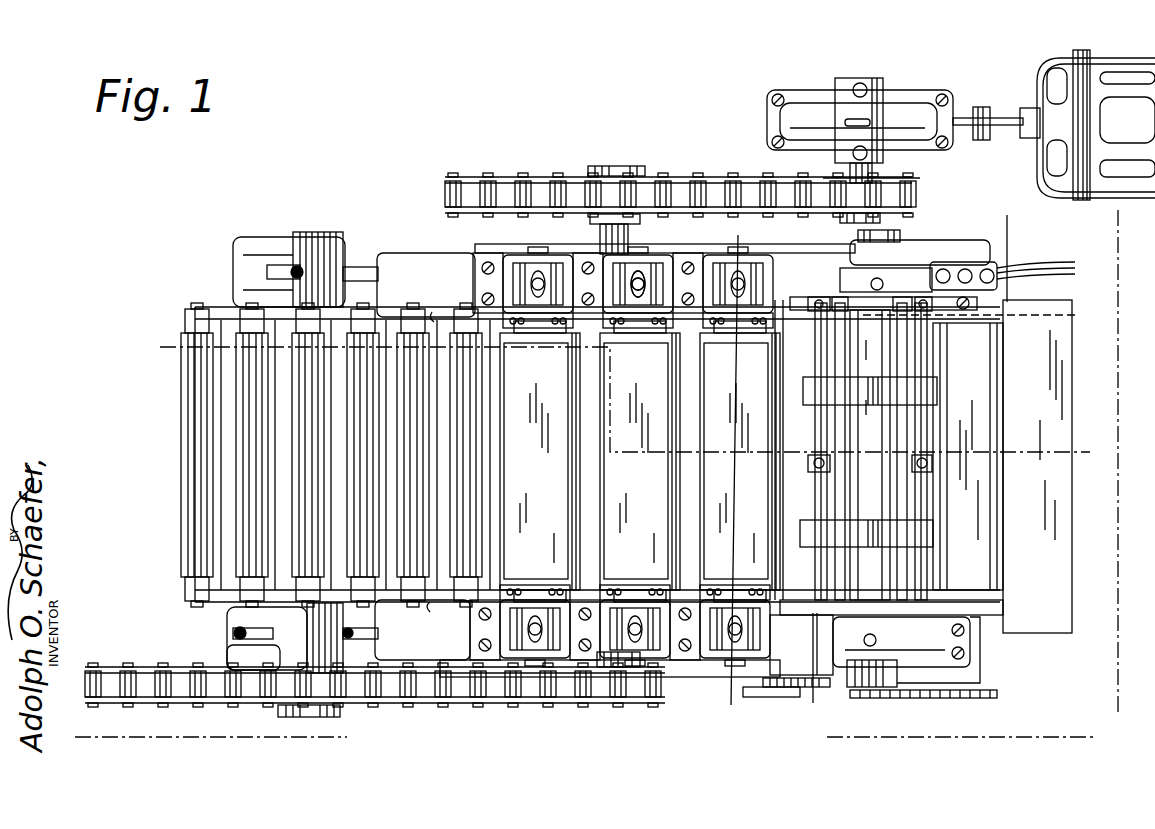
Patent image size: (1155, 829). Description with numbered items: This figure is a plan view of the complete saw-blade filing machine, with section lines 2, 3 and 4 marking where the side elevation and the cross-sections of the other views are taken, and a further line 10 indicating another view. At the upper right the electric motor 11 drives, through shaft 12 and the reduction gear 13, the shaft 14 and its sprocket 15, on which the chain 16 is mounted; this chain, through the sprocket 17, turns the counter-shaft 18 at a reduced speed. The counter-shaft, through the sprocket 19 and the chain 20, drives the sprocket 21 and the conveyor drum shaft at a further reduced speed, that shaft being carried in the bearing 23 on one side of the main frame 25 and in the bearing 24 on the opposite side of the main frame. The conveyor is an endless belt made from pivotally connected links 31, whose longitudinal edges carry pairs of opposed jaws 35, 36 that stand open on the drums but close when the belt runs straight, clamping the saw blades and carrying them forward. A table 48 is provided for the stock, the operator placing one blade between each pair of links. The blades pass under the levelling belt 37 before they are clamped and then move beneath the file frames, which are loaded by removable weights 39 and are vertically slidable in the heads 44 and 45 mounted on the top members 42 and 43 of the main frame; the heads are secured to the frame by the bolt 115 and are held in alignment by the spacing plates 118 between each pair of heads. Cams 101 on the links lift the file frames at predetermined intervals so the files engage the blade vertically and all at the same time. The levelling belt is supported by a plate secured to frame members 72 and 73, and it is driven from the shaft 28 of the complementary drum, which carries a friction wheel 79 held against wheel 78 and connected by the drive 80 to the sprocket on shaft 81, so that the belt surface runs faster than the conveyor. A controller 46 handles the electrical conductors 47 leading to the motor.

The electric motor 11 is at (1126, 68).
The shaft 12 is at (1003, 120).
The reduction gear 13 is at (790, 122).
The shaft 14 is at (875, 172).
The sprocket 15 is at (836, 182).
The chain 16 is at (740, 185).
The sprocket 17 is at (585, 171).
The counter-shaft 18 is at (604, 238).
The sprocket 19 is at (662, 677).
The chain 20 is at (476, 712).
The sprocket 21 is at (340, 714).
The bearing 23 is at (287, 655).
The bearing 24 is at (295, 240).
The main frame 25 is at (240, 254).
The shaft 28 is at (848, 703).
The links 31 is at (331, 455).
The jaw 35 is at (367, 406).
The jaw 36 is at (404, 432).
The levelling belt 37 is at (952, 392).
The removable weights 39 is at (640, 461).
The top member of main frame 42 is at (690, 421).
The top member of main frame 43 is at (422, 630).
The head 44 is at (523, 242).
The head 45 is at (502, 636).
The controller 46 is at (990, 267).
The electrical conductors 47 is at (1055, 262).
The table 48 is at (969, 424).
The frame member 72 is at (893, 634).
The frame member 73 is at (836, 303).
The wheel 78 is at (997, 694).
The friction wheel 79 is at (790, 698).
The drive 80 is at (815, 703).
The shaft 81 is at (816, 651).
The cams 101 is at (450, 454).
The bolt 115 is at (640, 271).
The spacing plates 118 is at (675, 281).
The center line 10 is at (767, 232).
The section line 2- 2 is at (75, 762).
The section line 3- 3 is at (165, 372).
The section line 4- 4 is at (1142, 212).